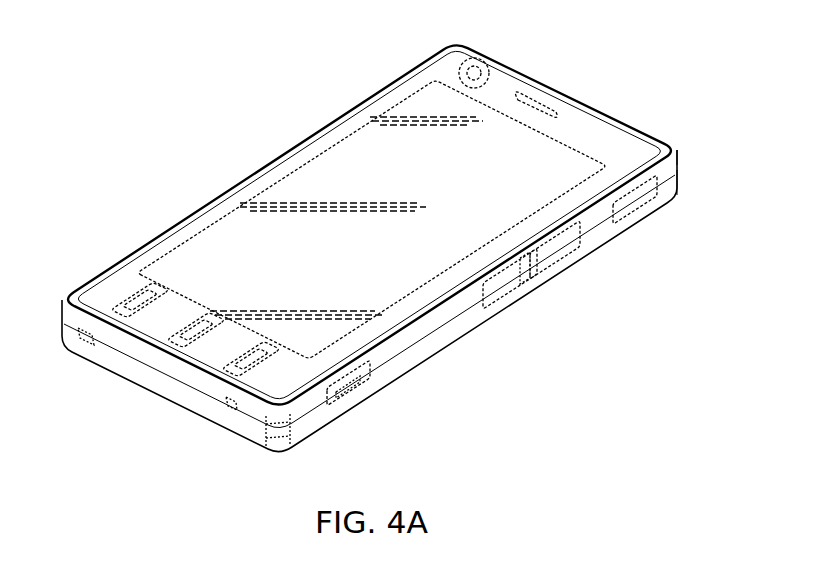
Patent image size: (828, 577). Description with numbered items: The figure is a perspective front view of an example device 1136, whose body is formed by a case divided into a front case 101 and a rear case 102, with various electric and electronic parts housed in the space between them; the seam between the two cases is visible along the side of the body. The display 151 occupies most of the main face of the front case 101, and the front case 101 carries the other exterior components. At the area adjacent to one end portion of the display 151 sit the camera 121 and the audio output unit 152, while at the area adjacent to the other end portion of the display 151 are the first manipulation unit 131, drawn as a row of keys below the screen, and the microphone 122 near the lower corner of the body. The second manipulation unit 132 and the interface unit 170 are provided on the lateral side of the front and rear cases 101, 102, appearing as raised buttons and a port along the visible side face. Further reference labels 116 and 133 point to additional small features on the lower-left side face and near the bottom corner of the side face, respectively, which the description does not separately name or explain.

The mobile terminal 1136 is at (270, 70).
The front case 101 is at (672, 163).
The rear case 102 is at (670, 194).
The microphone / side opening 116 is at (88, 340).
The camera 121 is at (477, 72).
The microphone 122 is at (232, 405).
The first manipulation unit 131 is at (112, 293).
The second manipulation unit 132 is at (513, 287).
The third manipulation unit 133 is at (365, 383).
The display 151 is at (306, 175).
The audio output unit 152 is at (545, 108).
The interface unit 170 is at (637, 206).